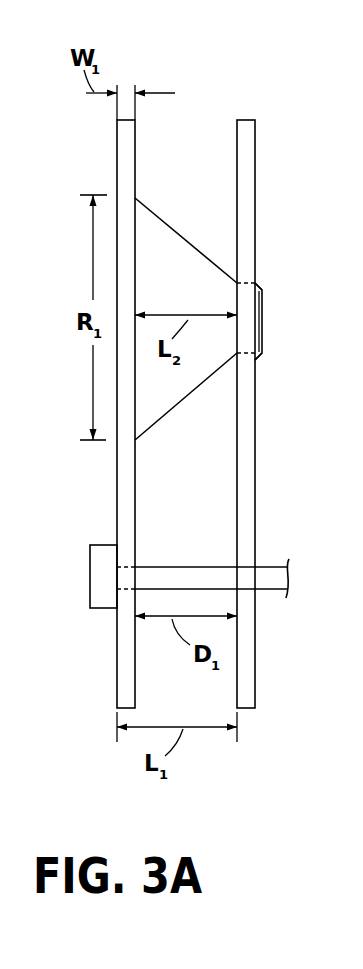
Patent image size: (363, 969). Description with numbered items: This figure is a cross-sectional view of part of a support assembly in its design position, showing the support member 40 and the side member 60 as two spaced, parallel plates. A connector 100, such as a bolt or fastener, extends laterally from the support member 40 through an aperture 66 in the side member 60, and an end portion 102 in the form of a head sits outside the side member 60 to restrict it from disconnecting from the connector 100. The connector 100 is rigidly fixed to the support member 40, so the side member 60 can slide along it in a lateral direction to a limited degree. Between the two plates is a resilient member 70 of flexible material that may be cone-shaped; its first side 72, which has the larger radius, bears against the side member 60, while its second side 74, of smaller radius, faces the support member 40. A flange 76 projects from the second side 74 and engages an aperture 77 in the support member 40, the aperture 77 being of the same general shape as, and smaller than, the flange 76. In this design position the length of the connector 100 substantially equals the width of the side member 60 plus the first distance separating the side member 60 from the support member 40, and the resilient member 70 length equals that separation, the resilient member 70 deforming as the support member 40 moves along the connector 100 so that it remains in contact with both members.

The support member 40 is at (255, 175).
The side member 60 is at (135, 152).
The aperture 66 is at (128, 582).
The resilient member 70 is at (234, 265).
The first side 72 is at (178, 383).
The second side 74 is at (266, 276).
The flange 76 is at (263, 329).
The aperture 77 is at (247, 355).
The connector 100 is at (218, 572).
The end portion 102 is at (97, 567).